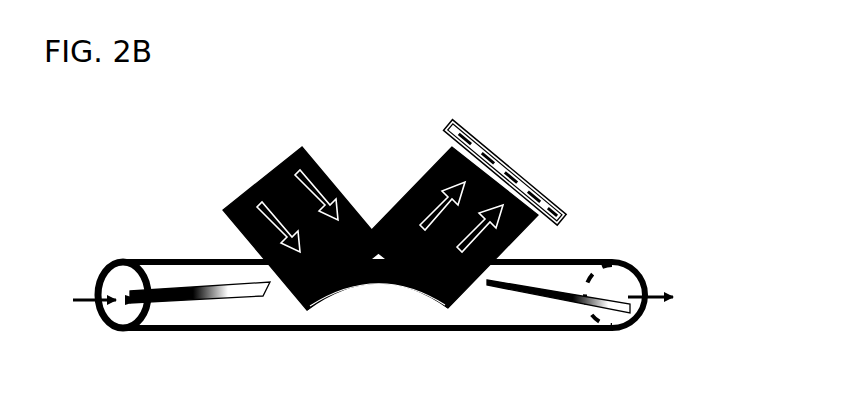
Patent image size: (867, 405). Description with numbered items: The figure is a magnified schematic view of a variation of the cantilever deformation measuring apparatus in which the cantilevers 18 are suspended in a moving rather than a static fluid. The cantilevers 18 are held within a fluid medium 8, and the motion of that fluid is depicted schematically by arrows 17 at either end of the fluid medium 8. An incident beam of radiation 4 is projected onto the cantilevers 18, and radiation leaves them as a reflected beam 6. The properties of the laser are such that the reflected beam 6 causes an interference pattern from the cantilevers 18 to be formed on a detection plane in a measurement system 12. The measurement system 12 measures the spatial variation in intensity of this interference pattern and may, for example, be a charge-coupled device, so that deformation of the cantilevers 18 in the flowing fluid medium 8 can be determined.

The input light guide panel 4 is at (268, 186).
The reflected beam 6 is at (428, 188).
The fluid medium 8 is at (187, 312).
The measurement system 12 is at (524, 182).
The arrows 17 is at (80, 300).
The cantilevers 18 is at (232, 306).